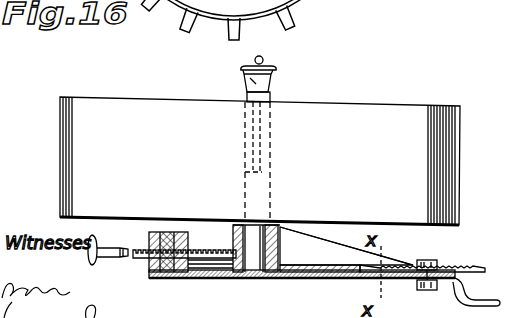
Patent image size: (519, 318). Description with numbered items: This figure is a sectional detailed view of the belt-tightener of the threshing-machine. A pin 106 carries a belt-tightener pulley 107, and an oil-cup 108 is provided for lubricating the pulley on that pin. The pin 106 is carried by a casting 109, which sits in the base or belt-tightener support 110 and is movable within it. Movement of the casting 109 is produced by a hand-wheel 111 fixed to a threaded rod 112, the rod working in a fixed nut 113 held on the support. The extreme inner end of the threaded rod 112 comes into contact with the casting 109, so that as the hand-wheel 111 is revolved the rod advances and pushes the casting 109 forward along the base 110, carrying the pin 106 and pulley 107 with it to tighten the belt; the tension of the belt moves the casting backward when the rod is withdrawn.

The pin 106 is at (267, 223).
The belt-tightener pulley 107 is at (260, 161).
The oil-cup 108 is at (278, 72).
The casting 109 is at (290, 275).
The base or belt-tightener support 110 is at (208, 273).
The hand-wheel 111 is at (156, 265).
The threaded rod 112 is at (143, 259).
The fixed nut 113 is at (159, 240).